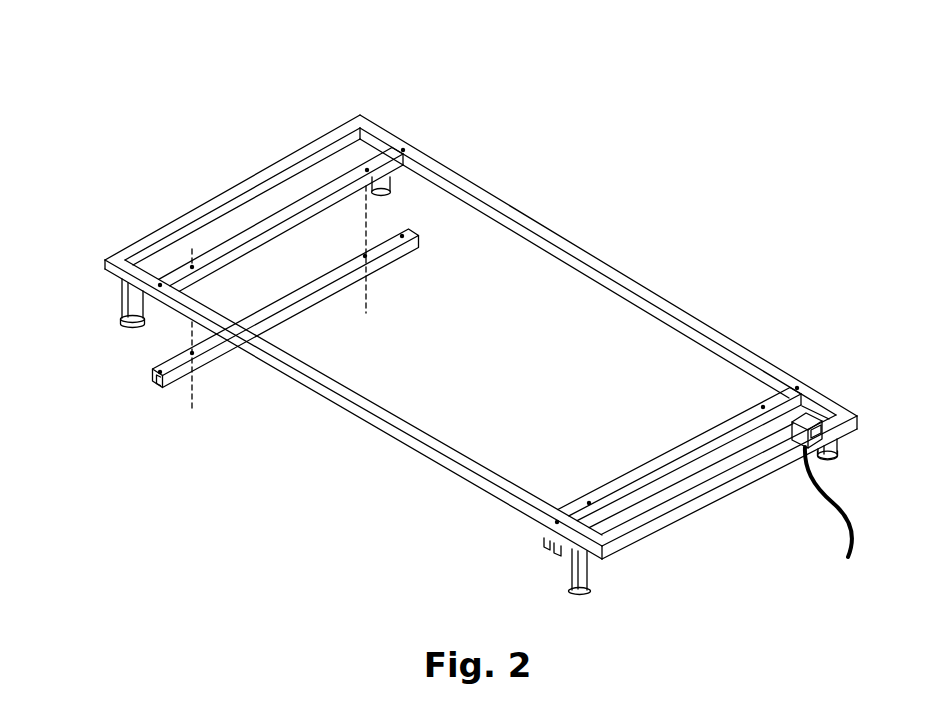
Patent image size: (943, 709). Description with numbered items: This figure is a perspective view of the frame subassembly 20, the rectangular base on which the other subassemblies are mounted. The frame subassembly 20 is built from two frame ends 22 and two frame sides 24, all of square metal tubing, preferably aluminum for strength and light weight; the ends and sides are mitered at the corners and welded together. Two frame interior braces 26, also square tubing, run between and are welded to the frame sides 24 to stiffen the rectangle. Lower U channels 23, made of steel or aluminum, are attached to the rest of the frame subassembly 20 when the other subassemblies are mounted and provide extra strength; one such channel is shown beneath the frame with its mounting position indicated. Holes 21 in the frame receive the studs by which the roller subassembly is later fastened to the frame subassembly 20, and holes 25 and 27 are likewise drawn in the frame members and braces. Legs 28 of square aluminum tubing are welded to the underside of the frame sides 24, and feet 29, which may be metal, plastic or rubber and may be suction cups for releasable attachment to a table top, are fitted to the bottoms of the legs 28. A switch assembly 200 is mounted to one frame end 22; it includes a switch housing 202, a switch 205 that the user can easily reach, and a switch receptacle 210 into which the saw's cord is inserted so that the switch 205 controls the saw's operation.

The frame subassembly 20 is at (672, 275).
The holes 21 is at (841, 416).
The frame ends 22 is at (238, 186).
The lower U channels 23 is at (183, 379).
The frame sides 24 is at (487, 192).
The mounting hole 25 is at (403, 150).
The frame interior braces 26 is at (224, 250).
The fastener hole 27 is at (367, 170).
The legs 28 is at (120, 299).
The feet 29 is at (121, 323).
The switch assembly 200 is at (790, 475).
The switch housing 202 is at (808, 412).
The switch 205 is at (820, 460).
The switch receptacle 210 is at (848, 551).